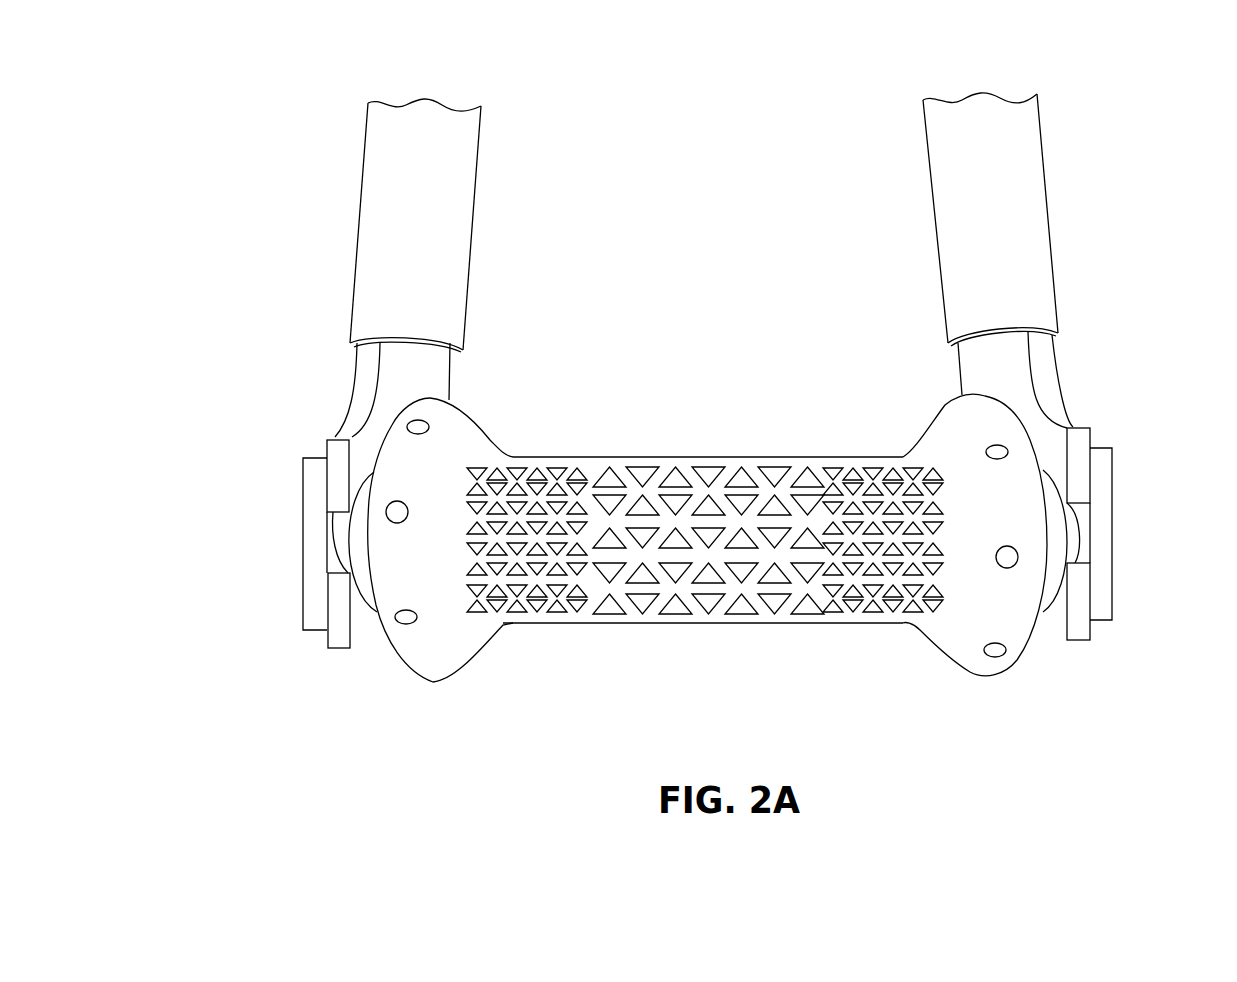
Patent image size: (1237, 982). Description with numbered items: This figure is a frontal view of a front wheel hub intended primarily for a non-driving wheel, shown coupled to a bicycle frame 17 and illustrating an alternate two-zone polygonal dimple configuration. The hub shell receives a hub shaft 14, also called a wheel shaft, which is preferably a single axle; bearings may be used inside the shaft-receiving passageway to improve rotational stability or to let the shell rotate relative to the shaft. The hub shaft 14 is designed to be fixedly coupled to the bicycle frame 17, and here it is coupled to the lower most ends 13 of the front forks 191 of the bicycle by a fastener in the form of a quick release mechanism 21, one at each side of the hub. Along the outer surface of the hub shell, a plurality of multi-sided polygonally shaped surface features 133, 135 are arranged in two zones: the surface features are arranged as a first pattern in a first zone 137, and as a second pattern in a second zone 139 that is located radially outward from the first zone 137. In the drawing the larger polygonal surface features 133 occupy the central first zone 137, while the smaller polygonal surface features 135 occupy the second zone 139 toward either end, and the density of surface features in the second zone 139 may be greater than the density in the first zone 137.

The front forks 191 is at (475, 195).
The bicycle frame 17 is at (1075, 190).
The first zone 137 is at (724, 440).
The second zone 139 is at (565, 440).
The multi-sided polygonally shaped surface features 135 is at (558, 468).
The multi-sided polygonally shaped surface features 133 is at (702, 468).
The hub shaft 14 is at (1075, 535).
The quick release mechanism 21 is at (294, 555).
The lower most ends 13 is at (342, 648).